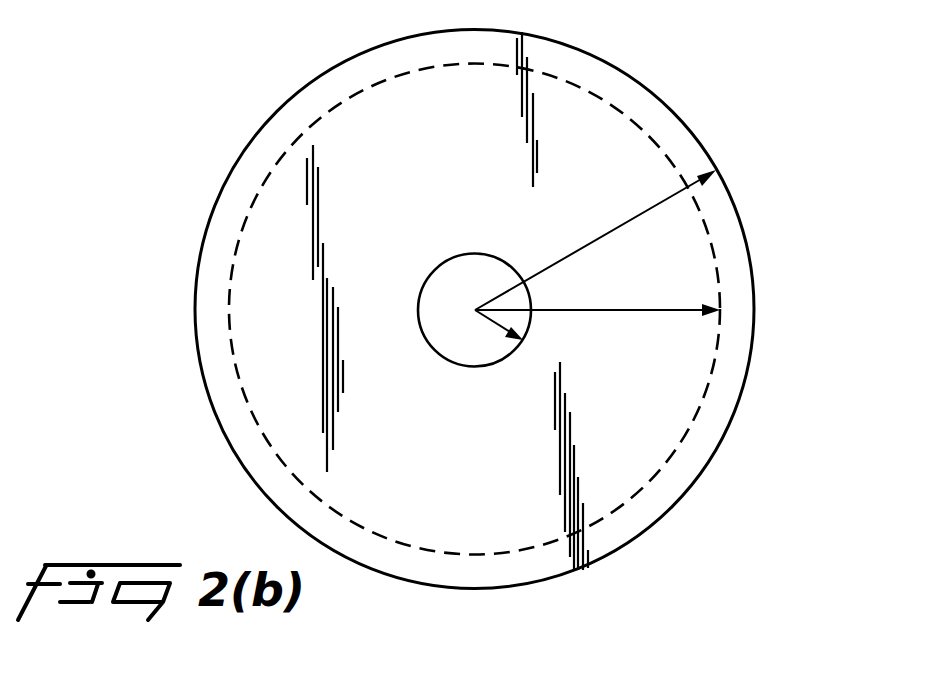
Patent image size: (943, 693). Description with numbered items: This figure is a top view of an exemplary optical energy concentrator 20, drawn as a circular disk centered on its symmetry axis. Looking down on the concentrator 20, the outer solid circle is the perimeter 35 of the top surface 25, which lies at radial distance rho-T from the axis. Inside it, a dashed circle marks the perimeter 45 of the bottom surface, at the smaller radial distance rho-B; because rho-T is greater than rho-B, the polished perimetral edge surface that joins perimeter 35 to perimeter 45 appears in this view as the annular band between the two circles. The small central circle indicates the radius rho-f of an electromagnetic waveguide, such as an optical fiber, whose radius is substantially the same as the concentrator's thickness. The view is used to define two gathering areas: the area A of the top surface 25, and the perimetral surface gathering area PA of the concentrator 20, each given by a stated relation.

The optical energy concentrator 20 is at (218, 146).
The top surface 25 is at (248, 298).
The perimeter of top surface 35 is at (737, 415).
The perimeter of bottom surface 45 is at (658, 478).
The area of top surface A is at (573, 102).
The perimetral surface gathering area PA is at (682, 140).